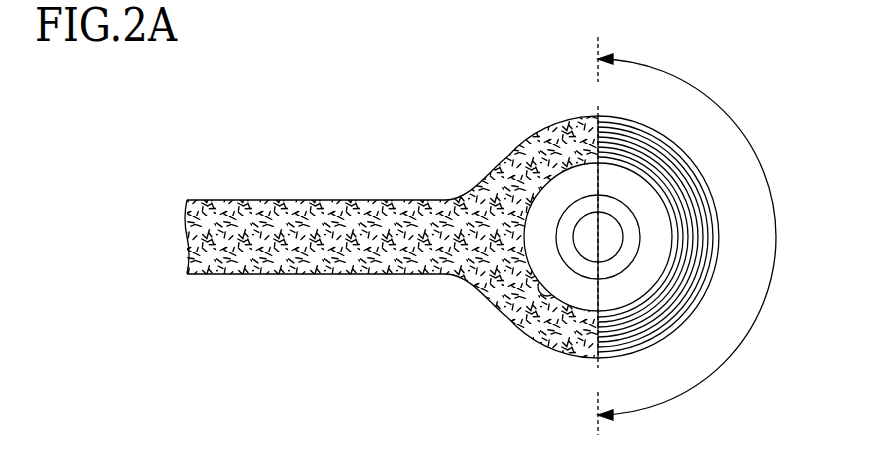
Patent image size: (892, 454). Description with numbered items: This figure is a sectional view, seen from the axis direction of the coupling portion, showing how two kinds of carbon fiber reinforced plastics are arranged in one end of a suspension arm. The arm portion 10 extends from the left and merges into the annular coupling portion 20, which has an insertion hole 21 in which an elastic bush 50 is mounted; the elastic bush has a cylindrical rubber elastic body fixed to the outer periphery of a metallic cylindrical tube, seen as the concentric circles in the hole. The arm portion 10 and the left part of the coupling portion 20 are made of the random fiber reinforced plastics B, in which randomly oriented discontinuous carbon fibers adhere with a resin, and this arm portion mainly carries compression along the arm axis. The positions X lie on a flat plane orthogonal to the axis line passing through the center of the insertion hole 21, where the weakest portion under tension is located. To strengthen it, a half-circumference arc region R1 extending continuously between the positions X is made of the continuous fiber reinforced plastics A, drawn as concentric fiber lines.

The arm portion 10 is at (278, 275).
The coupling portion 20 is at (643, 348).
The insertion hole 21 is at (541, 292).
The elastic bush 50 is at (557, 188).
The continuous fiber reinforced plastics A is at (713, 262).
The random fiber reinforced plastics B is at (488, 182).
The position X is at (599, 236).
The half-circumference arc region R1 is at (708, 237).